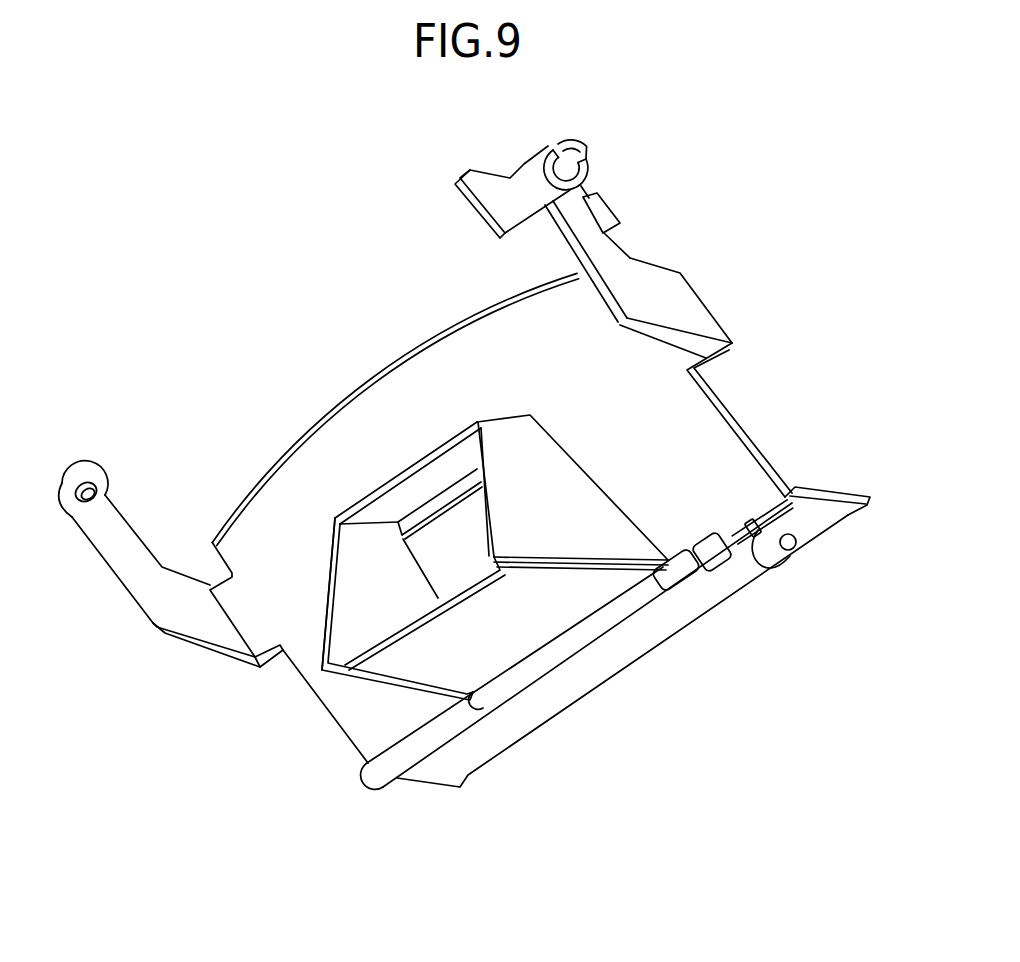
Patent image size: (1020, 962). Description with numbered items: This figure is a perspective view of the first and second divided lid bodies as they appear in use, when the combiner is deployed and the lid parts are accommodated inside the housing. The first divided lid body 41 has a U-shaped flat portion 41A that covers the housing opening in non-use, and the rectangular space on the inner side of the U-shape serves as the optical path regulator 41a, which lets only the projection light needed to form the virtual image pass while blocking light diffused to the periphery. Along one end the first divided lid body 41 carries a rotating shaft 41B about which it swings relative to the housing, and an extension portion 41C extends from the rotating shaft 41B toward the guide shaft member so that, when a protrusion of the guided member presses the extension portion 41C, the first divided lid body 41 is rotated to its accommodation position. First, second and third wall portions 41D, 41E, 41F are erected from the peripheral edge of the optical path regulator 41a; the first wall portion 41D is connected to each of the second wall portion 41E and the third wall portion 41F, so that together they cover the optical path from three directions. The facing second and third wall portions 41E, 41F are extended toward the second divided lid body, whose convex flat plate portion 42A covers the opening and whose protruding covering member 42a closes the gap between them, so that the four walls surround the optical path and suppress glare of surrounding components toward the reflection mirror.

The first divided lid body 41 is at (225, 313).
The U-shaped flat portion 41A is at (368, 424).
The rotating shaft 41B is at (538, 148).
The extension portion 41C is at (476, 209).
The first wall portion 41D is at (377, 490).
The second wall portion 41E is at (545, 492).
The third wall portion 41F is at (304, 648).
The optical path regulator 41a is at (473, 521).
The flat plate portion 42A is at (617, 653).
The covering member 42a is at (488, 620).